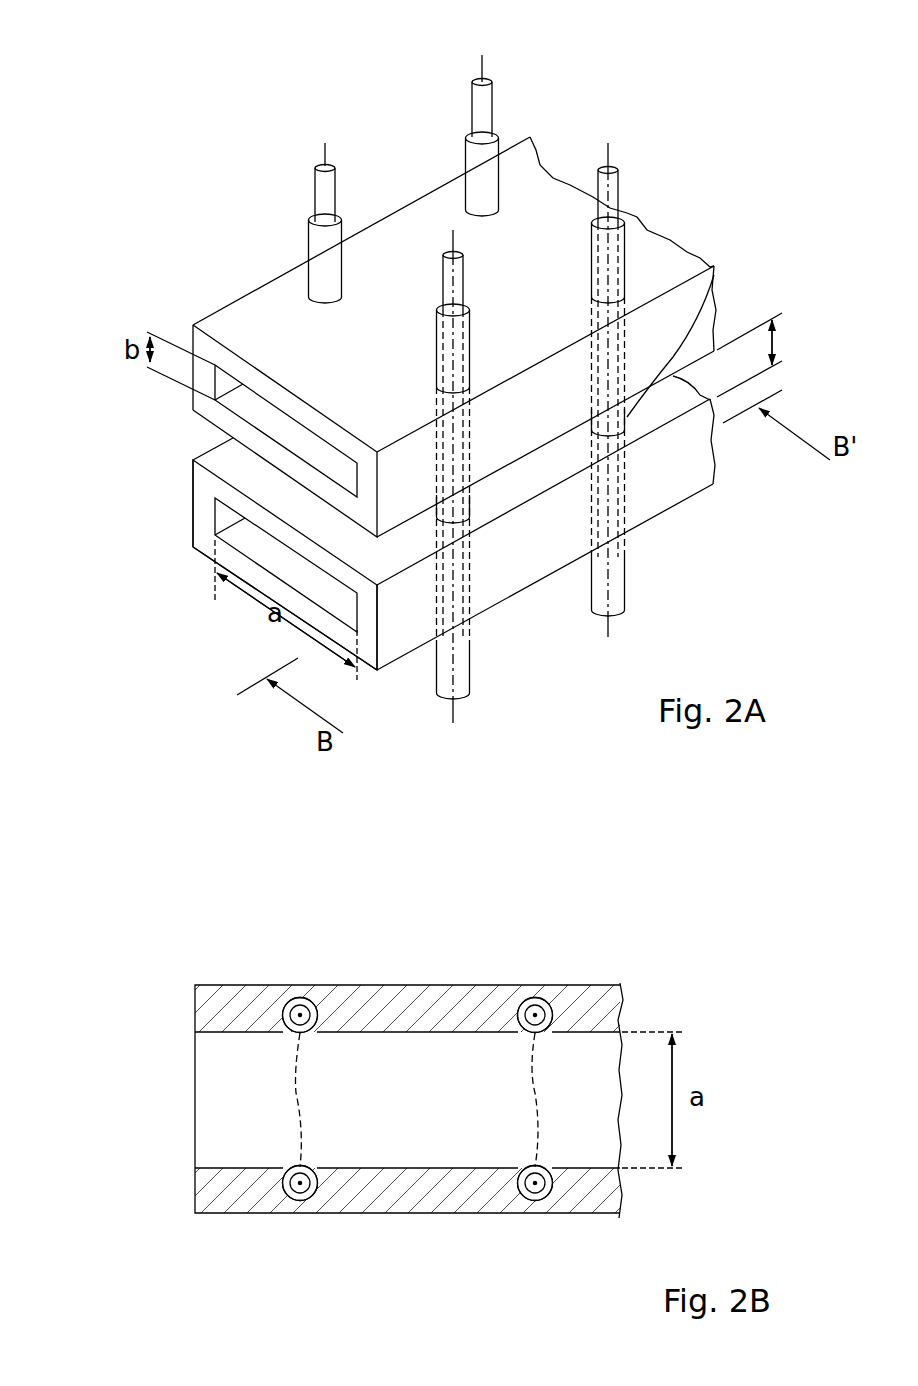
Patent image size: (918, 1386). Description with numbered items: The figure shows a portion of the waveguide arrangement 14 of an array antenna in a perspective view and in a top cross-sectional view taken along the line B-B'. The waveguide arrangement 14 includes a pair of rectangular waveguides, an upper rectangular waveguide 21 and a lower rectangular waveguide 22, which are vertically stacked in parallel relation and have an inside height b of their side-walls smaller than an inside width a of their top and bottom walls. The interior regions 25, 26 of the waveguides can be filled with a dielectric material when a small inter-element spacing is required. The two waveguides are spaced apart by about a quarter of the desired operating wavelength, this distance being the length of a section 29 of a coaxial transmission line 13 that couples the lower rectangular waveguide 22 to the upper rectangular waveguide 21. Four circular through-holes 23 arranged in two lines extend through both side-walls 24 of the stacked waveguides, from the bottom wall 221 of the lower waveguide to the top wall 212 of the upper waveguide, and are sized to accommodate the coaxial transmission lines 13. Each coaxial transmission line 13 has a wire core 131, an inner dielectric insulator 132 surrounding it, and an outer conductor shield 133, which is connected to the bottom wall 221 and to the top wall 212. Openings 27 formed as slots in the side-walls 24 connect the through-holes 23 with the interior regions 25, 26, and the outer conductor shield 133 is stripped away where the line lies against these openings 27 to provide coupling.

In FIG. 2A, the coaxial transmission line 13 is at (457, 160).
In FIG. 2B, the coaxial transmission line 13 is at (272, 983).
In FIG. 2A, the wire core 131 is at (482, 62).
In FIG. 2B, the wire core 131 is at (528, 1012).
In FIG. 2A, the inner dielectric insulator 132 is at (484, 103).
In FIG. 2B, the inner dielectric insulator 132 is at (543, 1010).
In FIG. 2A, the outer conductor shield 133 is at (495, 148).
In FIG. 2B, the outer conductor shield 133 is at (530, 998).
In FIG. 2A, the waveguide arrangement 14 is at (775, 335).
In FIG. 2A, the upper rectangular waveguide 21 is at (260, 322).
In FIG. 2A, the top wall 212 is at (287, 399).
In FIG. 2A, the lower rectangular waveguide 22 is at (225, 462).
In FIG. 2A, the bottom wall 221 is at (233, 572).
In FIG. 2A, the circular through-hole 23 is at (585, 385).
In FIG. 2B, the circular through-hole 23 is at (517, 1037).
In FIG. 2A, the side-wall 24 is at (193, 345).
In FIG. 2B, the side-wall 24 is at (195, 1005).
In FIG. 2A, the interior region 25 is at (247, 405).
In FIG. 2A, the interior region 26 is at (232, 540).
In FIG. 2B, the interior region 26 is at (252, 1077).
In FIG. 2B, the opening 27 is at (297, 1093).
In FIG. 2A, the section 29 is at (713, 280).